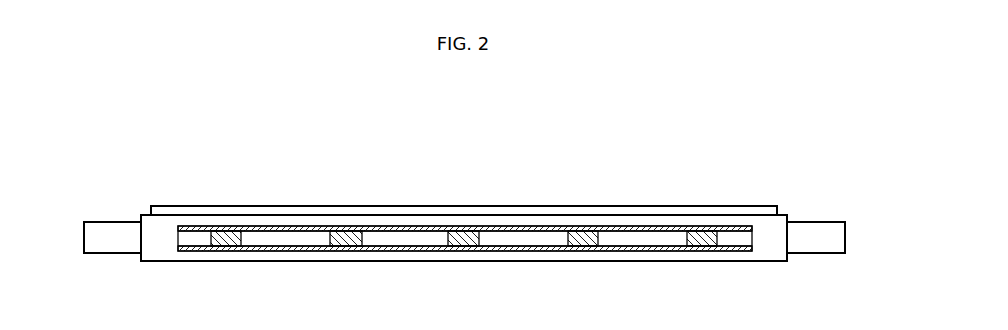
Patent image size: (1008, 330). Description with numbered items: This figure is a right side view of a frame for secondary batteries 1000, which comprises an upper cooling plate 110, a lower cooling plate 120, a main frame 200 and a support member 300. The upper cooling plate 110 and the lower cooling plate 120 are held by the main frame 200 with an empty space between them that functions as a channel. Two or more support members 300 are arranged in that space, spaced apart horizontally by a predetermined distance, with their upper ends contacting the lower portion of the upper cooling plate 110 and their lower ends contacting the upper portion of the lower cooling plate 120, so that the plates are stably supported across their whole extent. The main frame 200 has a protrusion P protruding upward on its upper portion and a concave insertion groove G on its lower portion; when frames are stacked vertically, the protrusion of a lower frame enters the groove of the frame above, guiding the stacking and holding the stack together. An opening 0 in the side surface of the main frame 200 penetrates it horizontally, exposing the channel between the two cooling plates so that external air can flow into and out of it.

The frame for secondary batteries 1000 is at (419, 146).
The main frame 200 is at (777, 229).
The upper cooling plate 110 is at (522, 222).
The protrusion P is at (714, 207).
The lower cooling plate 120 is at (522, 252).
The opening 0 is at (402, 243).
The support member 300 is at (338, 232).
The insertion groove G is at (656, 270).